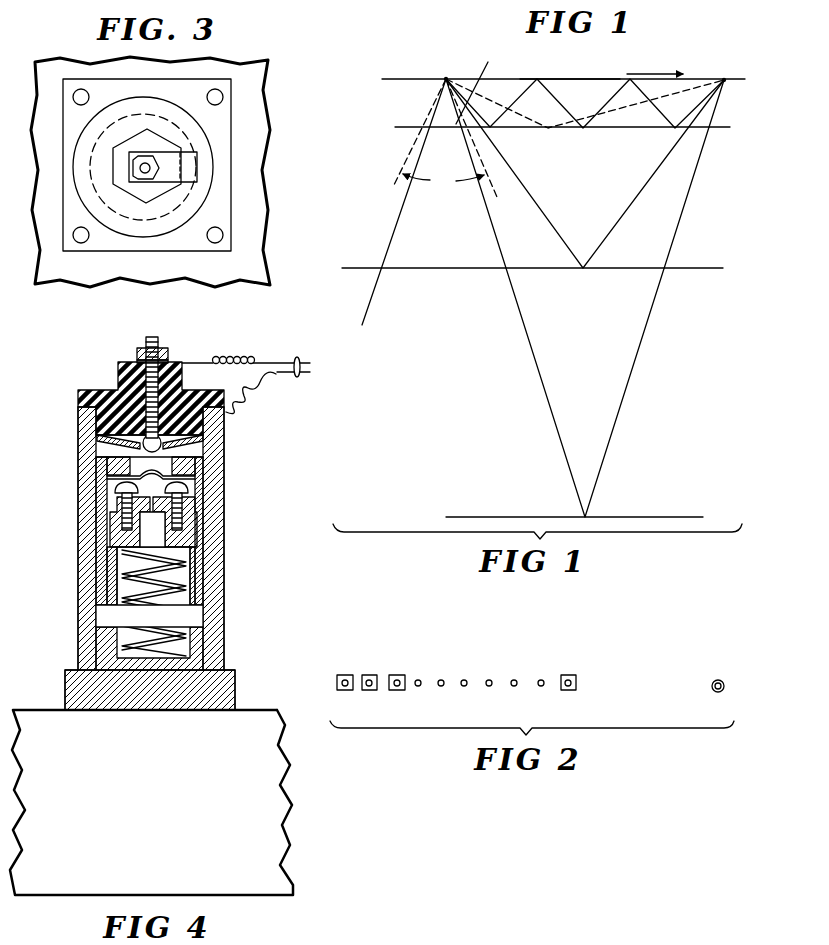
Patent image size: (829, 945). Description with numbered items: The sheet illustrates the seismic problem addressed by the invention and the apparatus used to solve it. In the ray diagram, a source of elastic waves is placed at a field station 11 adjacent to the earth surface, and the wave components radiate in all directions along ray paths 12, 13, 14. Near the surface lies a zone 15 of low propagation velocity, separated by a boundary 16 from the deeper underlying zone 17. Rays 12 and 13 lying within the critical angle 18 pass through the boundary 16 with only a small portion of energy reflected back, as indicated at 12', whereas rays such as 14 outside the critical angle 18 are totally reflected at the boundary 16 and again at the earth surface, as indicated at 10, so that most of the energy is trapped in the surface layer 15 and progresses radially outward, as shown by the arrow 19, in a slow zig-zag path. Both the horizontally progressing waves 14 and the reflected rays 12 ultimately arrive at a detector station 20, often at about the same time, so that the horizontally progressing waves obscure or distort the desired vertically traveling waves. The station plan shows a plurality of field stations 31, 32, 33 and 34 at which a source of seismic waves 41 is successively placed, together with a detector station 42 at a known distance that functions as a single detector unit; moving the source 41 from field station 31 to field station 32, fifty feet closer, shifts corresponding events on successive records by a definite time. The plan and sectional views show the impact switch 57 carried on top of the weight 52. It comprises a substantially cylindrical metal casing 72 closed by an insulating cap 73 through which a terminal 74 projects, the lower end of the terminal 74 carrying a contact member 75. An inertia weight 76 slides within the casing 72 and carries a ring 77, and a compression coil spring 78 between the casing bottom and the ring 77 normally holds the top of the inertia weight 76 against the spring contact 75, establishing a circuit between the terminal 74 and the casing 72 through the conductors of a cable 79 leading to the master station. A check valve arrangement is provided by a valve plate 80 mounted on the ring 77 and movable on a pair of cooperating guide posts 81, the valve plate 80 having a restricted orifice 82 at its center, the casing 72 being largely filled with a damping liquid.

In FIG. 1, the total reflection at the earth surface 10 is at (572, 79).
In FIG. 1, the field station 11 is at (447, 78).
In FIG. 1, the ray path 12 is at (543, 298).
In FIG. 1, the reflected energy portion 12' is at (585, 103).
In FIG. 1, the ray path 13 is at (497, 197).
In FIG. 1, the ray path 14 is at (479, 84).
In FIG. 1, the near surface zone 15 is at (381, 106).
In FIG. 1, the boundary 16 is at (605, 128).
In FIG. 1, the underlying zone 17 is at (338, 242).
In FIG. 1, the critical angle 18 is at (443, 182).
In FIG. 1, the arrow 19 is at (655, 61).
In FIG. 1, the detector station 20 is at (726, 80).
In FIG. 2, the field station 31 is at (352, 675).
In FIG. 2, the field station 32 is at (371, 675).
In FIG. 2, the field station 33 is at (404, 675).
In FIG. 2, the field station 34 is at (574, 675).
In FIG. 2, the source of seismic waves 41 is at (344, 690).
In FIG. 2, the detector station 42 is at (718, 680).
In FIG. 3, the weight 52 is at (248, 95).
In FIG. 4, the weight 52 is at (274, 813).
In FIG. 3, the impact switch 57 is at (219, 163).
In FIG. 4, the impact switch 57 is at (76, 573).
In FIG. 4, the casing 72 is at (212, 597).
In FIG. 3, the insulating cap 73 is at (202, 128).
In FIG. 4, the insulating cap 73 is at (104, 390).
In FIG. 3, the terminal 74 is at (140, 170).
In FIG. 4, the terminal 74 is at (152, 338).
In FIG. 4, the contact member 75 is at (190, 448).
In FIG. 4, the inertia weight 76 is at (200, 563).
In FIG. 4, the ring 77 is at (202, 522).
In FIG. 4, the compression coil spring 78 is at (202, 625).
In FIG. 4, the cable 79 is at (297, 378).
In FIG. 4, the valve plate 80 is at (190, 502).
In FIG. 4, the guide posts 81 is at (107, 479).
In FIG. 4, the restricted orifice 82 is at (150, 512).